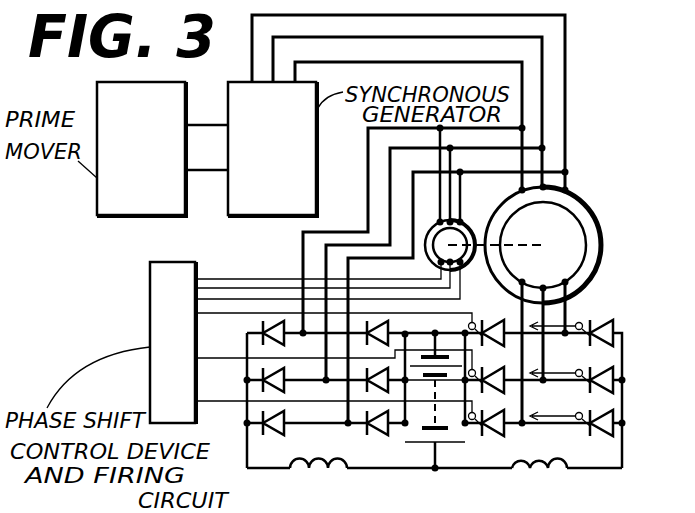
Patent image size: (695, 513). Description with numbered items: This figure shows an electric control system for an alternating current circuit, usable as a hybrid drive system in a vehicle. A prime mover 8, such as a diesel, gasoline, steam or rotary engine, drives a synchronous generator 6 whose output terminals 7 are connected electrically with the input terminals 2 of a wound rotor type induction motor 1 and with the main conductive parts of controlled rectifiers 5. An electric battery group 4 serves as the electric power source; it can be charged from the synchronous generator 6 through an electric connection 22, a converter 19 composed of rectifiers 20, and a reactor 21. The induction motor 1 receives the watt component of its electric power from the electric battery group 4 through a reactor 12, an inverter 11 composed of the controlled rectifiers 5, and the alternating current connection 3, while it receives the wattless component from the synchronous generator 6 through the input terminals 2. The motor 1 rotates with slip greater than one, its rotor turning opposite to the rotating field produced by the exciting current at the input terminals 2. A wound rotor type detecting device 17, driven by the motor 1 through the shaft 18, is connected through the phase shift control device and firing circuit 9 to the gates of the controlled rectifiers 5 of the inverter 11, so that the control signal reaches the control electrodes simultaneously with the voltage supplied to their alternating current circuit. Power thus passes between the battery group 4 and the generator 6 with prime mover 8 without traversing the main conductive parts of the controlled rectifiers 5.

The wound rotor type induction motor 1 is at (556, 245).
The input terminals 2 is at (522, 189).
The alternating current connection 3 is at (530, 316).
The electric battery group 4 is at (410, 445).
The controlled rectifiers 5 is at (601, 426).
The synchronous generator 6 is at (272, 149).
The output terminals 7 is at (295, 79).
The prime mover 8 is at (141, 149).
The phase shift control device and firing circuit 9 is at (173, 343).
The inverter 11 is at (553, 427).
The reactor 12 is at (543, 482).
The wound rotor type detecting device 17 is at (465, 223).
The shaft 18 is at (497, 248).
The converter 19 is at (326, 394).
The rectifiers 20 is at (258, 329).
The reactor 21 is at (303, 480).
The electric connection 22 is at (413, 197).